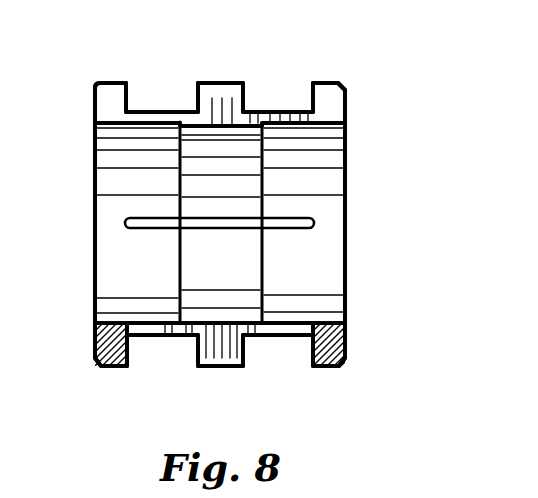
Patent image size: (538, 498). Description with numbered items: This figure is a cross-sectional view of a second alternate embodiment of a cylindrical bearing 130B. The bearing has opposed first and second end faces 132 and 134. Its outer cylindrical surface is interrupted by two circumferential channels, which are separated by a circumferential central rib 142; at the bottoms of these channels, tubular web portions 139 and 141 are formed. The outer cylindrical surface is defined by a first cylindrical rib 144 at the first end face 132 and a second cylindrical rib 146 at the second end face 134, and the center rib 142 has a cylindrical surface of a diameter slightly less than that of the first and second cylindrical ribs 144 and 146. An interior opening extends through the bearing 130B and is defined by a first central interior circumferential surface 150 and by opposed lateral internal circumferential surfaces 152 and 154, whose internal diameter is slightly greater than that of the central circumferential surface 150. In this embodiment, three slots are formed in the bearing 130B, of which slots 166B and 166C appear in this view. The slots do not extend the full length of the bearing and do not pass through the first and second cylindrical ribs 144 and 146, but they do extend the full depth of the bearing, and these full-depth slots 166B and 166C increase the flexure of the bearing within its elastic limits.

The bearing 130B is at (354, 80).
The first end face 132 is at (95, 238).
The second end face 134 is at (347, 245).
The tubular web portion 139 is at (288, 118).
The tubular web portion 141 is at (142, 128).
The circumferential central rib 142 is at (193, 97).
The first cylindrical rib 144 is at (93, 100).
The second cylindrical rib 146 is at (345, 102).
The first central interior circumferential surface 150 is at (240, 293).
The lateral internal circumferential surface 152 is at (118, 323).
The lateral internal circumferential surface 154 is at (312, 323).
The slot 166B is at (217, 348).
The slot 166C is at (160, 225).